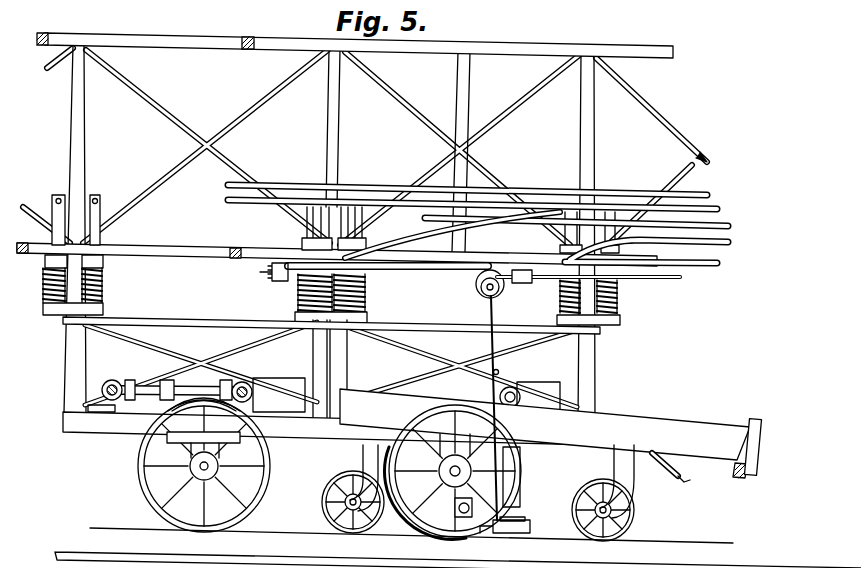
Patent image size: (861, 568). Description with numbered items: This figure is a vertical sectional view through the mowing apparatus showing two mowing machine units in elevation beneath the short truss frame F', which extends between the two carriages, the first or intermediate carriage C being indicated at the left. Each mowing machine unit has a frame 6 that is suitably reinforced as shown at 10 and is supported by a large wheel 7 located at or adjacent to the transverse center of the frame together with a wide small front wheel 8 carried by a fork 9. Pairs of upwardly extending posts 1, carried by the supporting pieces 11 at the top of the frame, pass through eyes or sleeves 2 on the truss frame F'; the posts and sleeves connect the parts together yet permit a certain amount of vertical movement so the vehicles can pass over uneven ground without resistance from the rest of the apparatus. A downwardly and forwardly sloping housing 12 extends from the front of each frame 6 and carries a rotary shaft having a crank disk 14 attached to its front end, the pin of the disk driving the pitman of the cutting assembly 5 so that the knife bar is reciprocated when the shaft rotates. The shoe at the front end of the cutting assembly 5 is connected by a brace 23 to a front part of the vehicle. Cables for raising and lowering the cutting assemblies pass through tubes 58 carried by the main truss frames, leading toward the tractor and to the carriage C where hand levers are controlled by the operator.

The upwardly extending posts 1 is at (318, 220).
The eyes or sleeves 2 is at (373, 243).
The cutting assembly 5 is at (552, 535).
The frame 6 is at (122, 422).
The large wheel 7 is at (263, 493).
The wide small front wheel 8 is at (380, 517).
The fork 9 is at (372, 468).
The reinforcement 10 is at (230, 352).
The supporting pieces 11 is at (103, 310).
The downwardly and forwardly sloping housing 12 is at (703, 432).
The crank disk 14 is at (737, 470).
The brace 23 is at (683, 481).
The tubes 58 is at (542, 210).
The first or intermediate carriage C is at (55, 357).
The short truss frame F' is at (362, 219).